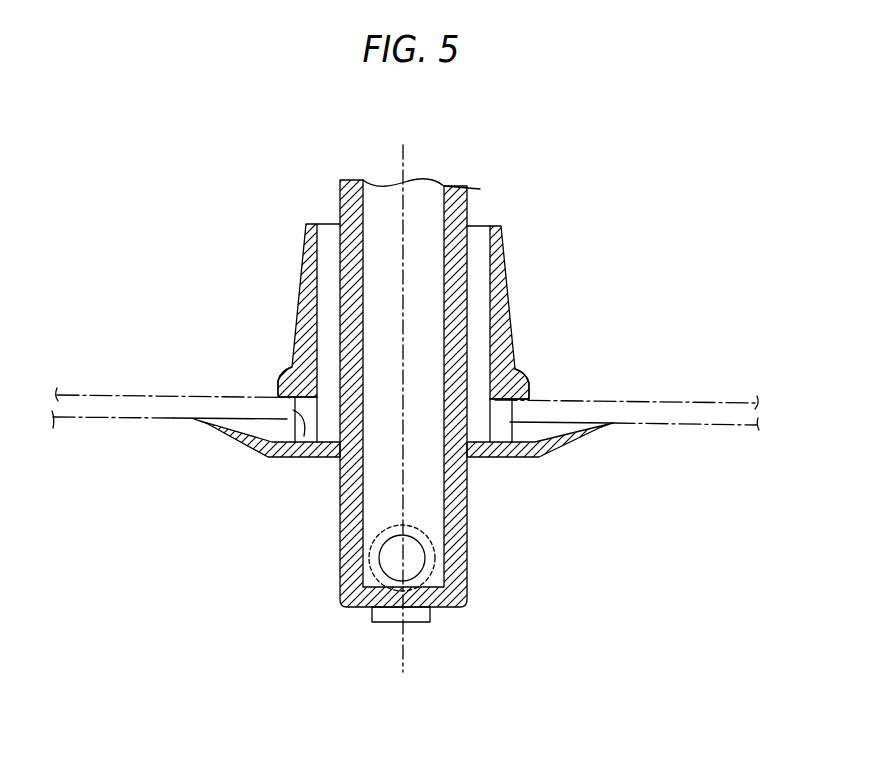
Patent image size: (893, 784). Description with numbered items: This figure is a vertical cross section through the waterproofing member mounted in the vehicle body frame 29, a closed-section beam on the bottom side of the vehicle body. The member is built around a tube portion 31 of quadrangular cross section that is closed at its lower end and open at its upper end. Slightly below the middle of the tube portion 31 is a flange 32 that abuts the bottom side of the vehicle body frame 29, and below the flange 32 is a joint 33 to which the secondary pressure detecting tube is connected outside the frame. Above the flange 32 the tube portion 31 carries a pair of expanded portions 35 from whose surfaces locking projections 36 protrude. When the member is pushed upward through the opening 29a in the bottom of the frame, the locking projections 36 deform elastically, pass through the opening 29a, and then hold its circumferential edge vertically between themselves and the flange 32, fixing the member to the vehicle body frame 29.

The vehicle body frame 29 is at (103, 394).
The opening 29a is at (305, 437).
The tube portion 31 is at (472, 210).
The flange 32 is at (572, 442).
The joint 33 is at (356, 531).
The expanded portions 35 is at (297, 273).
The locking projections 36 is at (295, 368).